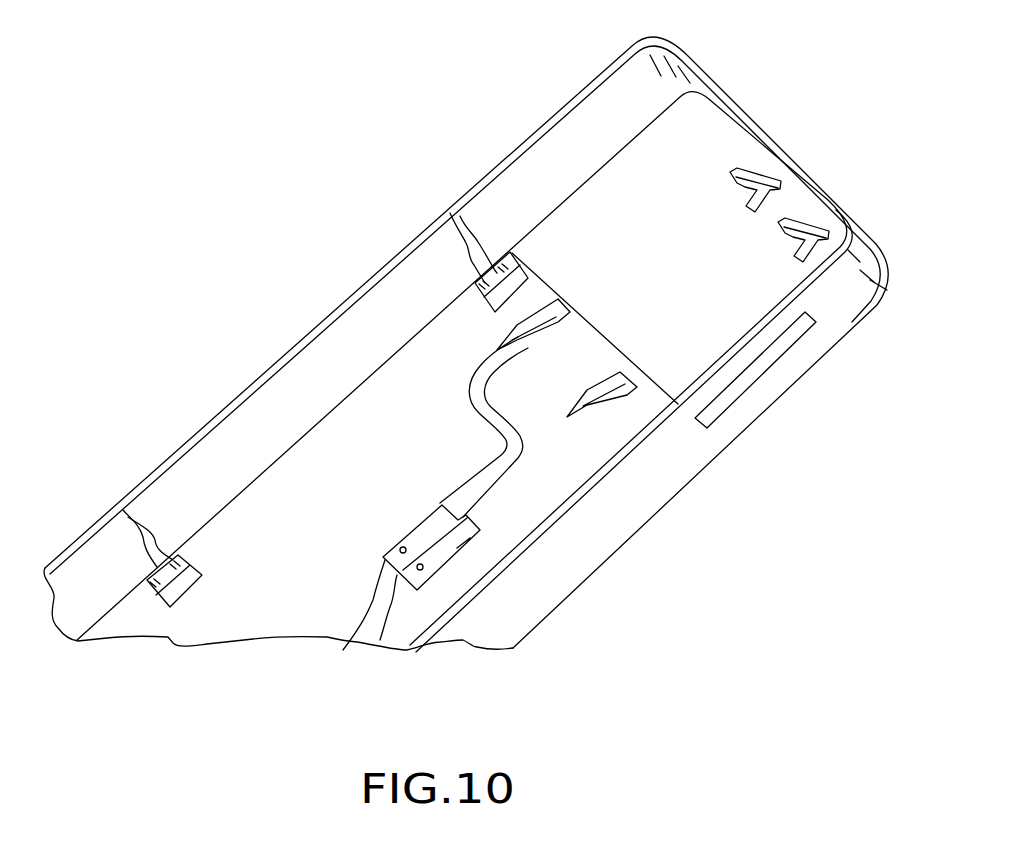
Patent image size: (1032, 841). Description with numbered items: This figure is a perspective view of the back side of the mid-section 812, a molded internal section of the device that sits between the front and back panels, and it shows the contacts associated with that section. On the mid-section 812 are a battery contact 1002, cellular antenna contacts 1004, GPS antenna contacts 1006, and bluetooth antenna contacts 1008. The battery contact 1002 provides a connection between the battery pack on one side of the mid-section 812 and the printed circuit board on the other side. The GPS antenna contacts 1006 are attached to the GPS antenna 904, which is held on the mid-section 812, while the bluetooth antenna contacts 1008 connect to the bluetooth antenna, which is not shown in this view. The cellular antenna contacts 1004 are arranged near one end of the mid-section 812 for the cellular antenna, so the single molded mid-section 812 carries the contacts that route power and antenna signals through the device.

The mid-section 812 is at (643, 530).
The GPS antenna 904 is at (855, 256).
The battery contact 1002 is at (397, 563).
The cellular antenna contacts 1004 is at (779, 178).
The GPS antenna contacts 1006 is at (470, 237).
The bluetooth antenna contacts 1008 is at (132, 515).